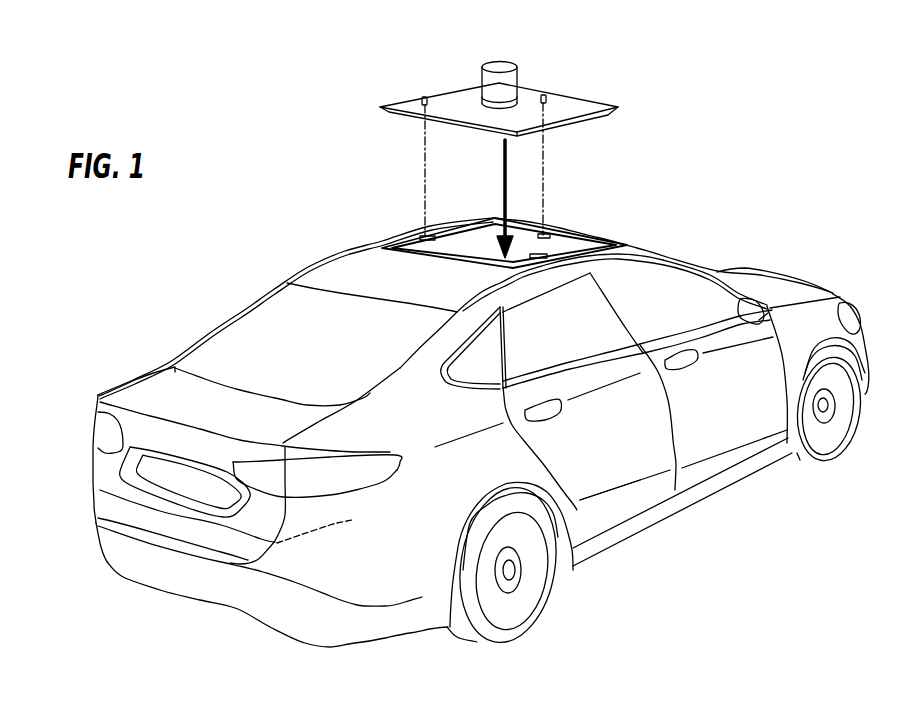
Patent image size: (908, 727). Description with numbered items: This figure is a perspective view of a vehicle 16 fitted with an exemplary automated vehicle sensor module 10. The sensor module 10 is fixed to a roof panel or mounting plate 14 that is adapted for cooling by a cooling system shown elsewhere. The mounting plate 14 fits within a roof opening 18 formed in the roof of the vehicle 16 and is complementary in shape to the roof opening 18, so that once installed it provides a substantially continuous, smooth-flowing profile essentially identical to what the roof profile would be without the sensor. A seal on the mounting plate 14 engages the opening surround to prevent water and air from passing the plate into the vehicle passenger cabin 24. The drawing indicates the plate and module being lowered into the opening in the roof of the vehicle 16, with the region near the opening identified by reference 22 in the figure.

The sensor module 10 is at (512, 62).
The mounting plate 14 is at (573, 98).
The vehicle 16 is at (692, 262).
The roof opening 18 is at (405, 238).
The vehicle roof 22 is at (387, 243).
The vehicle passenger cabin 24 is at (567, 242).